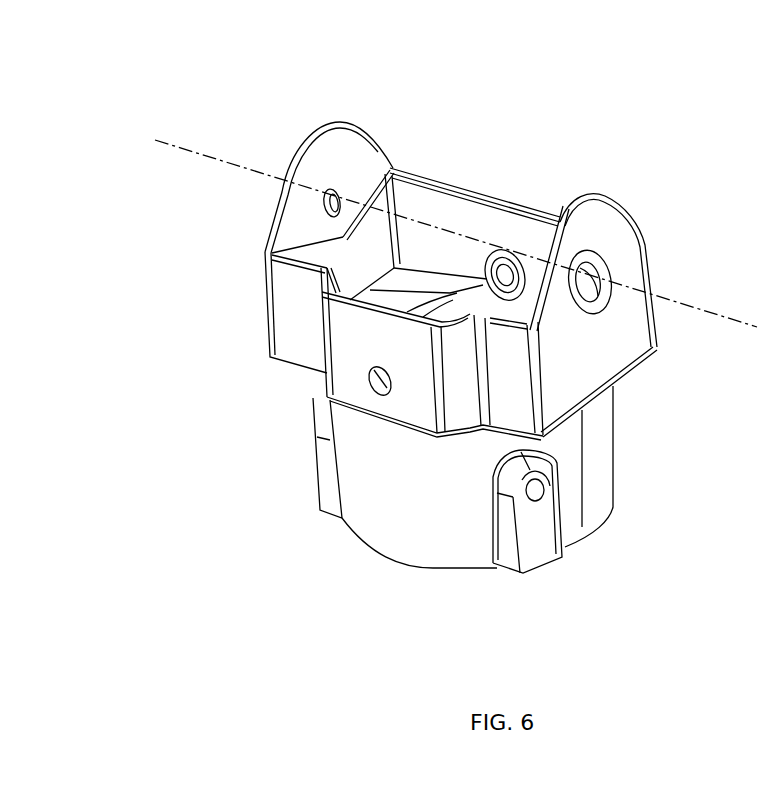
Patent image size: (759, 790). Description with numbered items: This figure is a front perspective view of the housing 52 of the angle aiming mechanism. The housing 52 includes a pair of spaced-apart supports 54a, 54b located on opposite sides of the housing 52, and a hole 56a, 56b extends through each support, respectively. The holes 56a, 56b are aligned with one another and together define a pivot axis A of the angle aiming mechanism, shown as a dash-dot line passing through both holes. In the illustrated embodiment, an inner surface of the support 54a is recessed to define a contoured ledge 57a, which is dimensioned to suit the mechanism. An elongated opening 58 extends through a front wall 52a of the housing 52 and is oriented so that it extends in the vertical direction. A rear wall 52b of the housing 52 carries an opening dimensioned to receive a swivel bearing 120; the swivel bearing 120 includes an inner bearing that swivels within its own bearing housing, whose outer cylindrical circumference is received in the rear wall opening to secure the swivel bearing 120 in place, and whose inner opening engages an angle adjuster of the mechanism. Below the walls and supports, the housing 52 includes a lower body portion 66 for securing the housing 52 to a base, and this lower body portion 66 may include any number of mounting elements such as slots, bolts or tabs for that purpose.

The pivot axis A is at (180, 153).
The housing 52 is at (247, 343).
The front wall 52a is at (343, 348).
The rear wall 52b is at (447, 227).
The support 54a is at (310, 138).
The support 54b is at (630, 215).
The hole 56a is at (338, 192).
The hole 56b is at (600, 272).
The contoured ledge 57a is at (342, 235).
The elongated opening 58 is at (370, 385).
The lower body portion 66 is at (447, 508).
The swivel bearing 120 is at (513, 250).